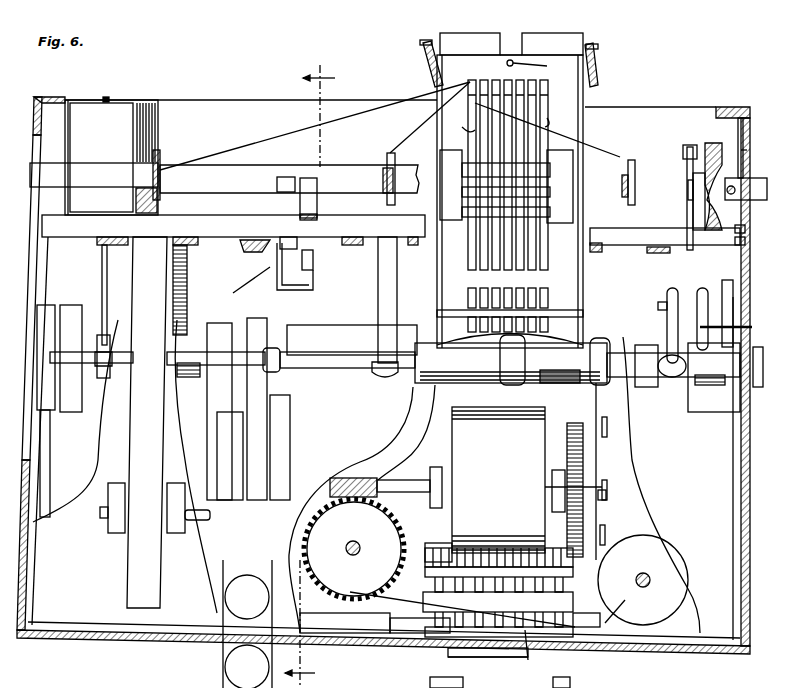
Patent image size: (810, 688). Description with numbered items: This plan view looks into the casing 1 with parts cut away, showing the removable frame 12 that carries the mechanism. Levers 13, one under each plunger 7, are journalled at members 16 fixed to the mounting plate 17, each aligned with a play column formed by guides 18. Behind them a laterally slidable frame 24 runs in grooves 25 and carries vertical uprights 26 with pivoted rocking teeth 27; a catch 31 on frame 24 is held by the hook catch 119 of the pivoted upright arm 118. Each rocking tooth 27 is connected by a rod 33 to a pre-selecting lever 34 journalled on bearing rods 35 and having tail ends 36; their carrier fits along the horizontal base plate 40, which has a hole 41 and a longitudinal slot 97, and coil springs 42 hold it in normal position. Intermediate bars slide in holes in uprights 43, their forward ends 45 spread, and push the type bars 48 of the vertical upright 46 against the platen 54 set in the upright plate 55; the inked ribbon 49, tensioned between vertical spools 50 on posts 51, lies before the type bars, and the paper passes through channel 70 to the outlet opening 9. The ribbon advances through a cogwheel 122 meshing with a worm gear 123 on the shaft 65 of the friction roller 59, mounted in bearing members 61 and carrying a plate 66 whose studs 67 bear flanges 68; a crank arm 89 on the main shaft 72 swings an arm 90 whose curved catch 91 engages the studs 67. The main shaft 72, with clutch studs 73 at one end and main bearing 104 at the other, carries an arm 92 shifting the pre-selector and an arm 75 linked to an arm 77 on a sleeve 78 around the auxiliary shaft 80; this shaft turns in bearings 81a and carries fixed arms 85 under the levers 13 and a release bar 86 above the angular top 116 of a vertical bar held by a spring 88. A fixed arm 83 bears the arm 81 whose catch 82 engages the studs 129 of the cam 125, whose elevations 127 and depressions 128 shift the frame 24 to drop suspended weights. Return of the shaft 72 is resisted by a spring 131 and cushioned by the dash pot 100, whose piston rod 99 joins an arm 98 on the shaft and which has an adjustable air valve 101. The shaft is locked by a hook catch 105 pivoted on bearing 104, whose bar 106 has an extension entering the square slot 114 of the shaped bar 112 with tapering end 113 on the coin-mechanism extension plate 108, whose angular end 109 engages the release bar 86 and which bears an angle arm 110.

The casing 1 is at (136, 639).
The plunger 7 is at (310, 373).
The paper outlet opening 9 is at (488, 665).
The frame 12 is at (38, 145).
The lever 13 is at (132, 583).
The bearing member 16 is at (112, 535).
The mounting plate 17 is at (345, 346).
The guide 18 is at (118, 246).
The slidable frame 24 is at (42, 172).
The groove 25 is at (111, 157).
The upright 26 is at (147, 174).
The rocking tooth 27 is at (162, 158).
The catch 31 is at (283, 177).
The rod 33 is at (262, 134).
The pre-selecting lever 34 is at (466, 133).
The journal rod 35 is at (548, 160).
The tail end 36 is at (473, 80).
The base plate 40 is at (468, 33).
The hole 41 is at (536, 67).
The coil spring 42 is at (430, 67).
The upright 43 is at (443, 310).
The forward end 45 is at (499, 570).
The type-bar upright 46 is at (492, 613).
The type bar 48 is at (581, 617).
The inked ribbon 49 is at (396, 598).
The spool 50 is at (360, 518).
The post 51 is at (358, 552).
The platen 54 is at (560, 645).
The upright plate 55 is at (440, 638).
The friction roller 59 is at (500, 460).
The bearing member 61 is at (437, 467).
The roller shaft 65 is at (415, 480).
The plate 66 is at (567, 512).
The stud 67 is at (592, 424).
The flange 68 is at (604, 438).
The channel 70 is at (534, 654).
The main shaft 72 is at (184, 378).
The stud 73 is at (760, 355).
The arm 75 is at (708, 284).
The arm 77 is at (752, 327).
The sleeve 78 is at (697, 397).
The auxiliary shaft 80 is at (336, 369).
The arm 81 is at (692, 275).
The bearing 81a is at (644, 346).
The catch 82 is at (688, 180).
The fixed arm 83 is at (658, 305).
The fixed arm 85 is at (378, 302).
The release bar 86 is at (278, 323).
The spring 88 is at (262, 250).
The crank arm 89 is at (598, 343).
The arm 90 is at (612, 408).
The curved catch 91 is at (604, 500).
The arm 92 is at (526, 363).
The longitudinal slot 97 is at (512, 32).
The arm 98 is at (103, 380).
The piston rod 99 is at (102, 281).
The dash pot 100 is at (158, 132).
The air valve 101 is at (107, 97).
The main bearing 104 is at (27, 411).
The hook catch 105 is at (72, 408).
The bar 106 is at (108, 359).
The extension plate 108 is at (250, 304).
The angular end 109 is at (257, 278).
The angle arm 110 is at (313, 273).
The shaped bar 112 is at (290, 462).
The tapering end 113 is at (278, 372).
The square slot 114 is at (290, 419).
The angular top portion 116 is at (290, 235).
The upright arm 118 is at (318, 217).
The hook catch 119 is at (318, 186).
The cogwheel 122 is at (408, 538).
The worm gear 123 is at (380, 490).
The cam 125 is at (745, 230).
The elevation 127 is at (747, 150).
The depression 128 is at (745, 243).
The stud 129 is at (697, 144).
The spring 131 is at (173, 298).